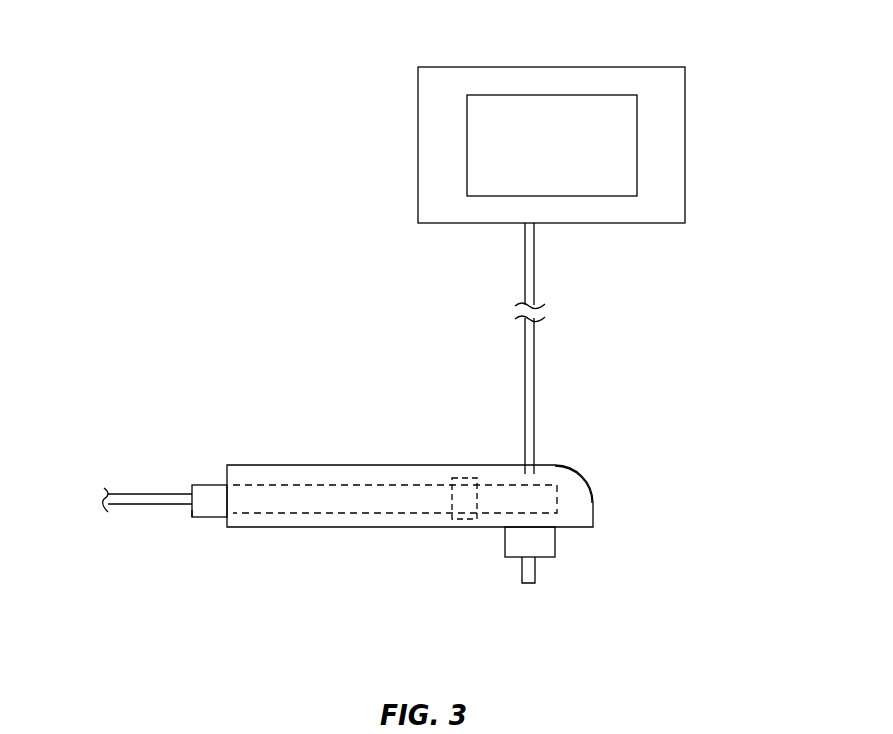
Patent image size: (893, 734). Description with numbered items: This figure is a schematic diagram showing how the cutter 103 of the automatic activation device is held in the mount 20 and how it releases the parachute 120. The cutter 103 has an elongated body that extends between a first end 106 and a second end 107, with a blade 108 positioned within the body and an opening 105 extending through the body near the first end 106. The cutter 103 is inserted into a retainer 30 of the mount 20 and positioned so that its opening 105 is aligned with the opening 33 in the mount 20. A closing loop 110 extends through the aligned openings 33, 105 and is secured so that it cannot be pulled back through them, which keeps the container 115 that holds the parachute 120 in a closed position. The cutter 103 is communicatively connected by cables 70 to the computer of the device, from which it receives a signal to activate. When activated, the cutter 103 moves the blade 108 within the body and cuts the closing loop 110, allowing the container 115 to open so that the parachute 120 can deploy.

The mount 20 is at (257, 431).
The retainer 30 is at (358, 468).
The opening 33 is at (530, 473).
The cables 70 is at (145, 500).
The cutter 103 is at (207, 483).
The opening 105 is at (503, 502).
The first end 106 is at (555, 498).
The second end 107 is at (192, 510).
The blade 108 is at (467, 500).
The closing loop 110 is at (533, 377).
The container 115 is at (685, 123).
The parachute 120 is at (566, 150).